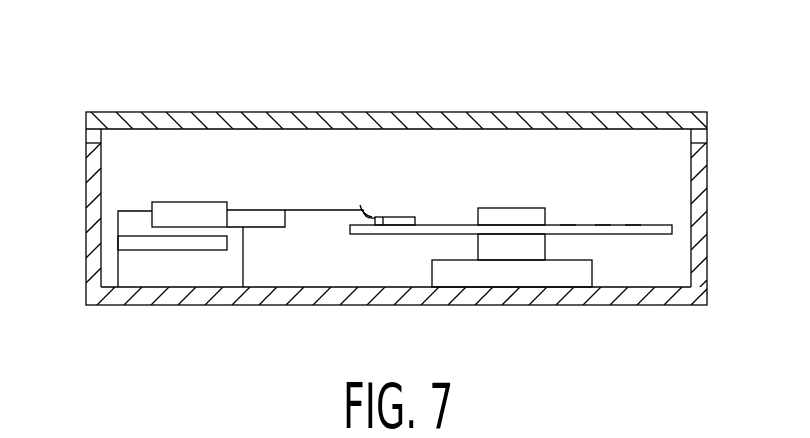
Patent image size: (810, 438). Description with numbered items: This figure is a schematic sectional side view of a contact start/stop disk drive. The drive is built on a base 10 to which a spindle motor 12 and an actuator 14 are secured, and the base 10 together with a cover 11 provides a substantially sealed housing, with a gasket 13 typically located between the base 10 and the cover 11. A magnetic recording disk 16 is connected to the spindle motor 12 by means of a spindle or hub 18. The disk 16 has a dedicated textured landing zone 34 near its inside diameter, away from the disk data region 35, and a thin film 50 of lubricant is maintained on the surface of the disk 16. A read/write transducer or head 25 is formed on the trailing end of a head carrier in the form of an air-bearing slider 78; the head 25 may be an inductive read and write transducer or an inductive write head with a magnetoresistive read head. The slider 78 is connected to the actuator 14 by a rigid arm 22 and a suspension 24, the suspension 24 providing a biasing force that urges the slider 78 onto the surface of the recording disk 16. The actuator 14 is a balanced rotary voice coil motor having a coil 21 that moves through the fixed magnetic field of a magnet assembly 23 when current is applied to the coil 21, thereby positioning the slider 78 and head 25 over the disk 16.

The base 10 is at (633, 295).
The cover 11 is at (123, 122).
The spindle motor 12 is at (520, 270).
The gasket 13 is at (703, 133).
The actuator 14 is at (160, 278).
The magnetic recording disk 16 is at (673, 230).
The spindle or hub 18 is at (508, 208).
The coil 21 is at (160, 202).
The rigid arm 22 is at (253, 217).
The magnet assembly 23 is at (125, 242).
The suspension 24 is at (300, 210).
The read/write transducer or head 25 is at (364, 212).
The textured landing zone 34 is at (568, 225).
The disk data region 35 is at (603, 225).
The thin film of lubricant 50 is at (633, 223).
The air-bearing slider 78 is at (407, 217).